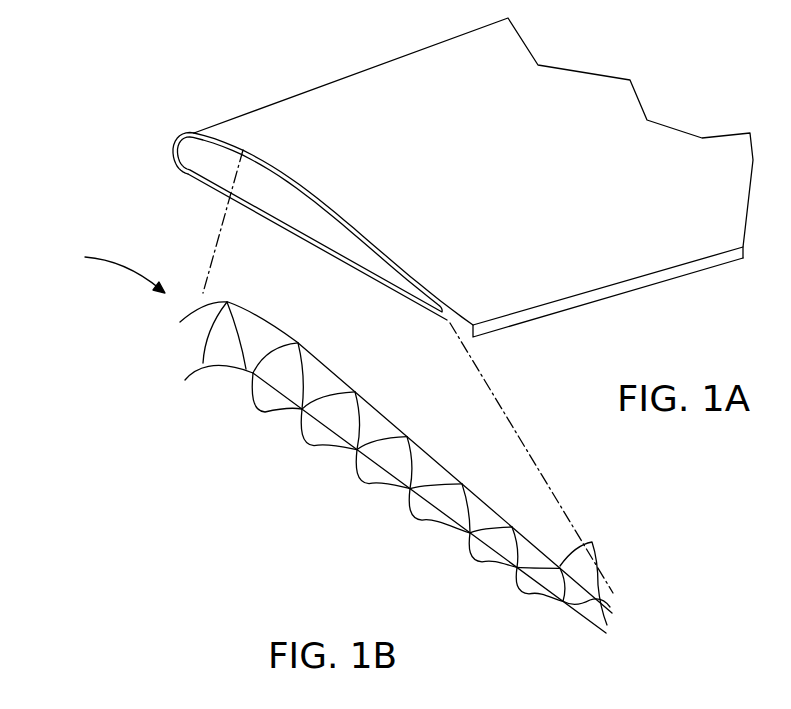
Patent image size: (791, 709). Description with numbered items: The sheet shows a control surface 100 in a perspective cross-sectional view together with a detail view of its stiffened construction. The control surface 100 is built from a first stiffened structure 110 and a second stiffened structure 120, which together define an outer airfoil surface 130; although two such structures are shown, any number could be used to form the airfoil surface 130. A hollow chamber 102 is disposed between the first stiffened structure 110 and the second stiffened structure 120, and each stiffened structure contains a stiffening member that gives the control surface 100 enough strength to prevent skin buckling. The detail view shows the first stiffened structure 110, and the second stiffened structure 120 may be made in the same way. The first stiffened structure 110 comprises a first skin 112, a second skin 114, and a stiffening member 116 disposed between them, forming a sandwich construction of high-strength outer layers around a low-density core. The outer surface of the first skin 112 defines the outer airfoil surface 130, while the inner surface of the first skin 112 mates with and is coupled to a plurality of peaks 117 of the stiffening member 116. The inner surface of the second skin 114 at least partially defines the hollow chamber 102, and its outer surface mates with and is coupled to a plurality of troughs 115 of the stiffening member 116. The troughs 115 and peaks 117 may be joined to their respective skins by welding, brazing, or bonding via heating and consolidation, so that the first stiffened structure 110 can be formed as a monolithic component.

In FIG. 1A, the control surface 100 is at (464, 154).
In FIG. 1A, the hollow chamber 102 is at (287, 202).
In FIG. 1A, the first stiffened structure 110 is at (303, 188).
In FIG. 1B, the first stiffened structure 110 is at (105, 267).
In FIG. 1A, the first skin 112 is at (343, 229).
In FIG. 1B, the first skin 112 is at (332, 371).
In FIG. 1A, the second skin 114 is at (340, 237).
In FIG. 1B, the second skin 114 is at (322, 432).
In FIG. 1B, the troughs 115 is at (264, 413).
In FIG. 1B, the stiffening member 116 is at (207, 348).
In FIG. 1B, the peaks 117 is at (228, 303).
In FIG. 1A, the second stiffened structure 120 is at (282, 228).
In FIG. 1A, the outer airfoil surface 130 is at (487, 242).